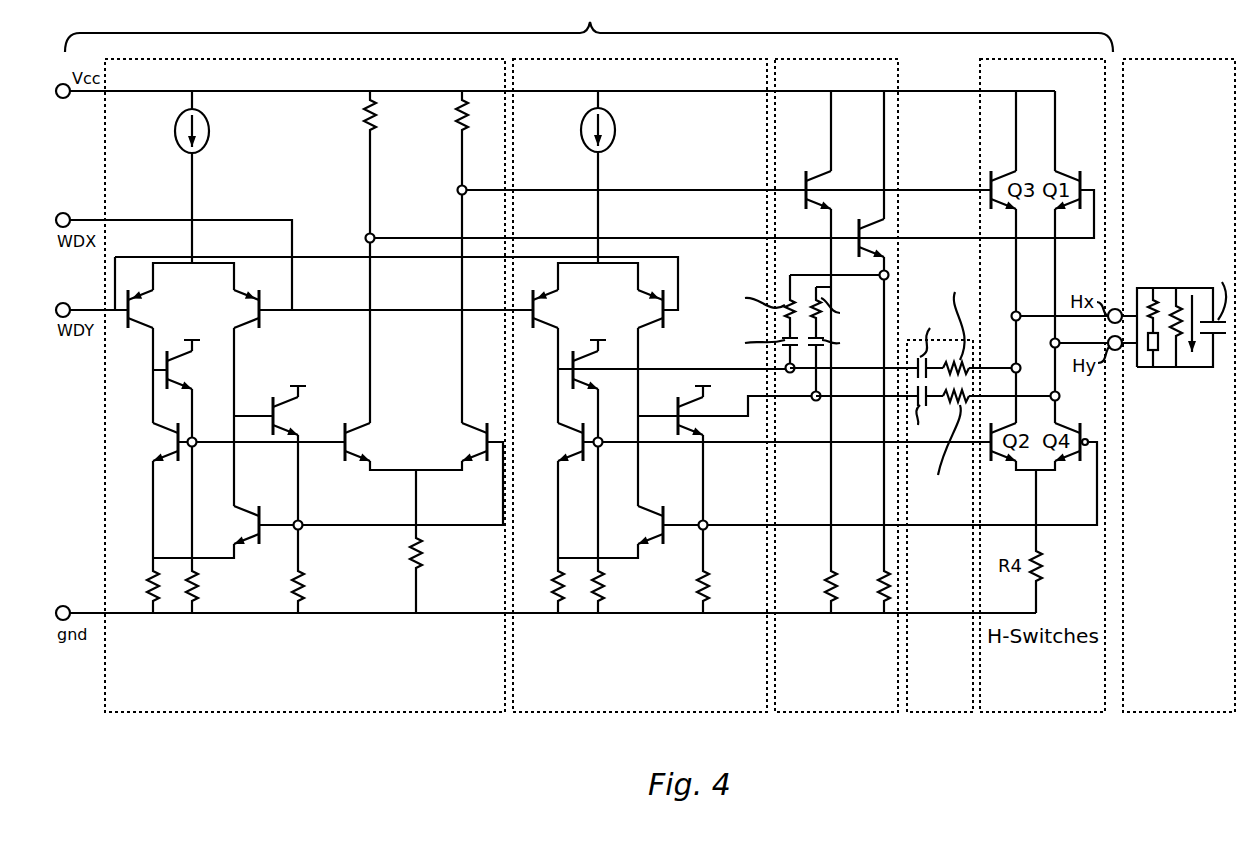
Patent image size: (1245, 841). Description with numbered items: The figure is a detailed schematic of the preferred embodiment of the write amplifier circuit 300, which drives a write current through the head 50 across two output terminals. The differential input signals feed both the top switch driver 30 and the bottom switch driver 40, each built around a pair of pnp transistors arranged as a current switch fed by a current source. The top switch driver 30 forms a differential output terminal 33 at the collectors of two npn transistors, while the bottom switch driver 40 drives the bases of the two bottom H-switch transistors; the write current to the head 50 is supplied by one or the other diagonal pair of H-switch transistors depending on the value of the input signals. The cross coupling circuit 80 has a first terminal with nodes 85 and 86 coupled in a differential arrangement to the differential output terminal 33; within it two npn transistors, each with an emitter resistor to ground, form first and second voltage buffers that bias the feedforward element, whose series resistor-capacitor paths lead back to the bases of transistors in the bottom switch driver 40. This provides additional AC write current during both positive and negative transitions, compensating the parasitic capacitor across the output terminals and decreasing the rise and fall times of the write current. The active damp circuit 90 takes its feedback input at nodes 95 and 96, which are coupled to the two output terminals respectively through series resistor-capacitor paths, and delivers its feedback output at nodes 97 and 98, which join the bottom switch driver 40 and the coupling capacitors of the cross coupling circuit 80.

The write amplifier circuit 300 is at (589, 26).
The top switch driver 30 is at (256, 700).
The bottom switch driver 40 is at (617, 697).
The head 50 is at (1175, 58).
The cross coupling circuit 80 is at (830, 693).
The active damp circuit 90 is at (935, 692).
The differential output terminal 33 is at (365, 238).
The node 85 is at (812, 189).
The node 86 is at (870, 247).
The node 95 is at (1021, 368).
The node 96 is at (1060, 396).
The node 97 is at (790, 373).
The node 98 is at (820, 400).